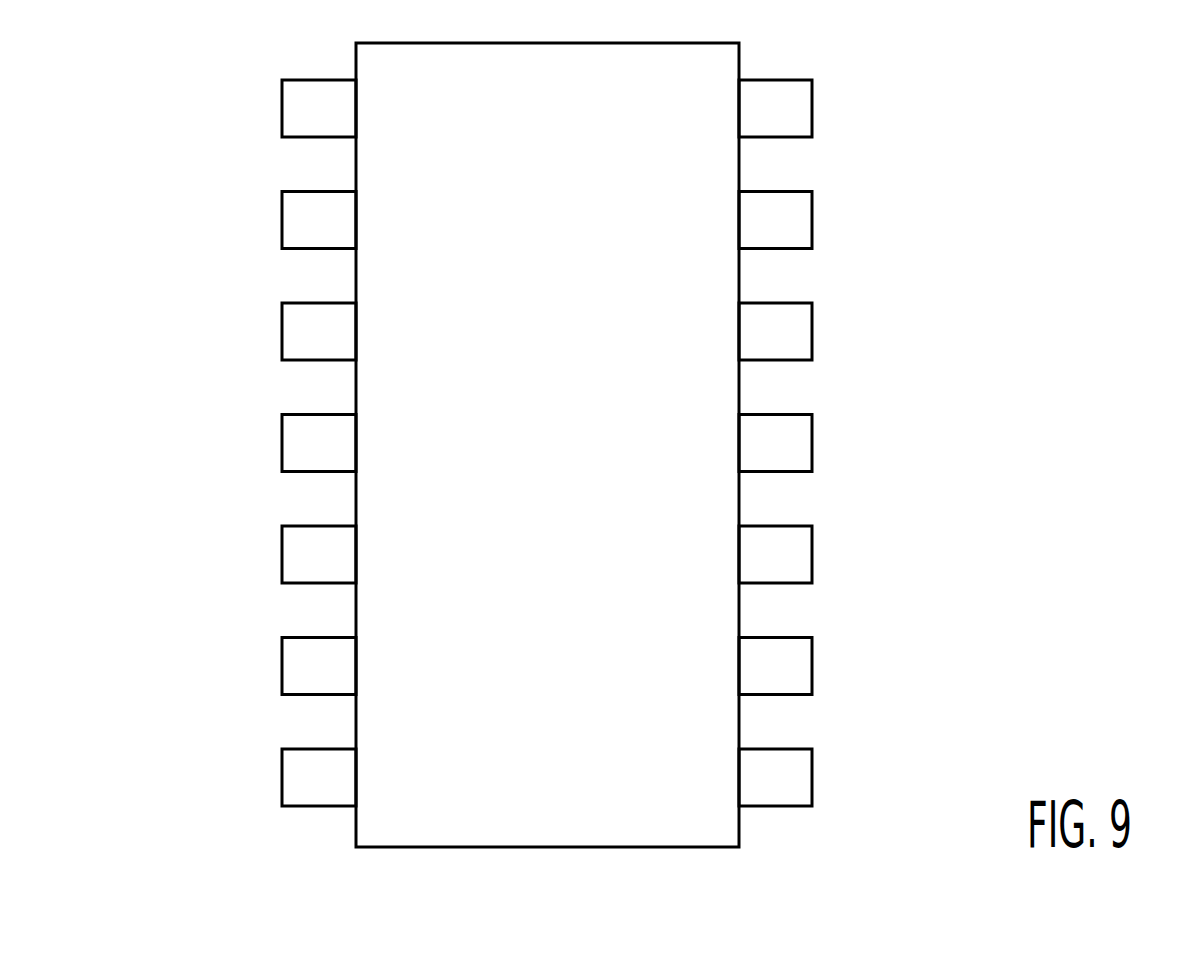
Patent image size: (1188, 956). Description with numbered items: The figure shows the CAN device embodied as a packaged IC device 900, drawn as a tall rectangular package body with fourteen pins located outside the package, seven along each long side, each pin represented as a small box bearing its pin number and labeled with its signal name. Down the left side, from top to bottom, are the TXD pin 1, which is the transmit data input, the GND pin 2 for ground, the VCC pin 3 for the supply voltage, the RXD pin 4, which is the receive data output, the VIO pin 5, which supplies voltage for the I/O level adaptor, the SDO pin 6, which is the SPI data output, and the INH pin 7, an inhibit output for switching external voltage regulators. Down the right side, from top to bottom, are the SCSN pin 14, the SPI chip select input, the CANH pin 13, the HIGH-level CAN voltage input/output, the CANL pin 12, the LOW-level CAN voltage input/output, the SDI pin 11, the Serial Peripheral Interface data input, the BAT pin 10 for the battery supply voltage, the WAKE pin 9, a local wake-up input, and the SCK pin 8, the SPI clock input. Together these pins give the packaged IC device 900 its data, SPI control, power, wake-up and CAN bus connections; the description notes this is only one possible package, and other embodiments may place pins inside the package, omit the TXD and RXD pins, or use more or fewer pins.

The packaged IC device 900 is at (739, 59).
The TXD pin 1 is at (281, 108).
The GND pin 2 is at (282, 220).
The VCC pin 3 is at (282, 331).
The RXD pin 4 is at (282, 443).
The VIO pin 5 is at (286, 554).
The SDO pin 6 is at (282, 666).
The INH pin 7 is at (286, 777).
The SCK pin 8 is at (809, 777).
The WAKE pin 9 is at (818, 666).
The BAT pin 10 is at (810, 554).
The SDI pin 11 is at (805, 443).
The CANL pin 12 is at (817, 331).
The CANH pin 13 is at (817, 220).
The SCSN pin 14 is at (817, 108).